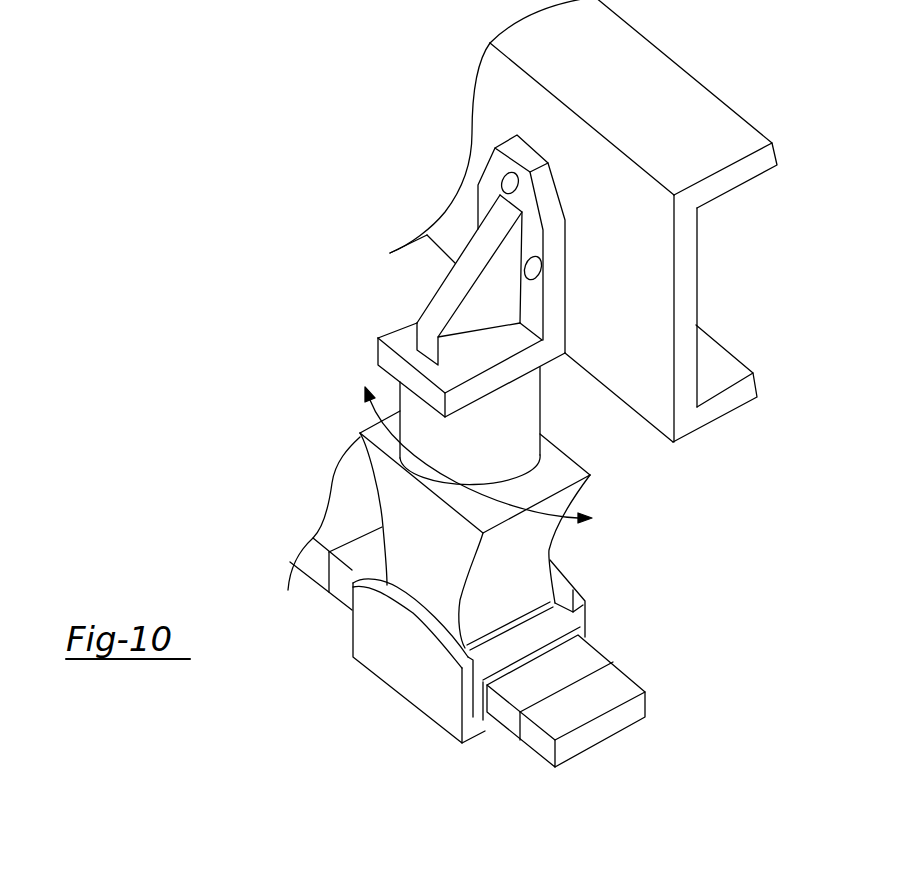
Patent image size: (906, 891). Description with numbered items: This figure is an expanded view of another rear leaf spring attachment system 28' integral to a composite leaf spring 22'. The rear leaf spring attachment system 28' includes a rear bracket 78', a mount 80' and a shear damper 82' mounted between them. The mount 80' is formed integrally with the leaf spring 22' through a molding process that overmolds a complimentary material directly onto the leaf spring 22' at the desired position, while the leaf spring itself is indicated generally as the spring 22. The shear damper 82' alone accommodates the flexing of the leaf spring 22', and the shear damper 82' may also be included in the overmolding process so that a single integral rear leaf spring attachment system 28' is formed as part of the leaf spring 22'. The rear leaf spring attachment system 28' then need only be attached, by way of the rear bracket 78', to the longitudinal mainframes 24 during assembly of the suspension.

The longitudinal mainframes 24 is at (634, 101).
The rear bracket 78' is at (471, 297).
The rear leaf spring attachment system 28' is at (453, 397).
The leaf spring 22' is at (402, 507).
The base 22 is at (500, 663).
The mount 80' is at (475, 673).
The shear damper 82' is at (553, 620).